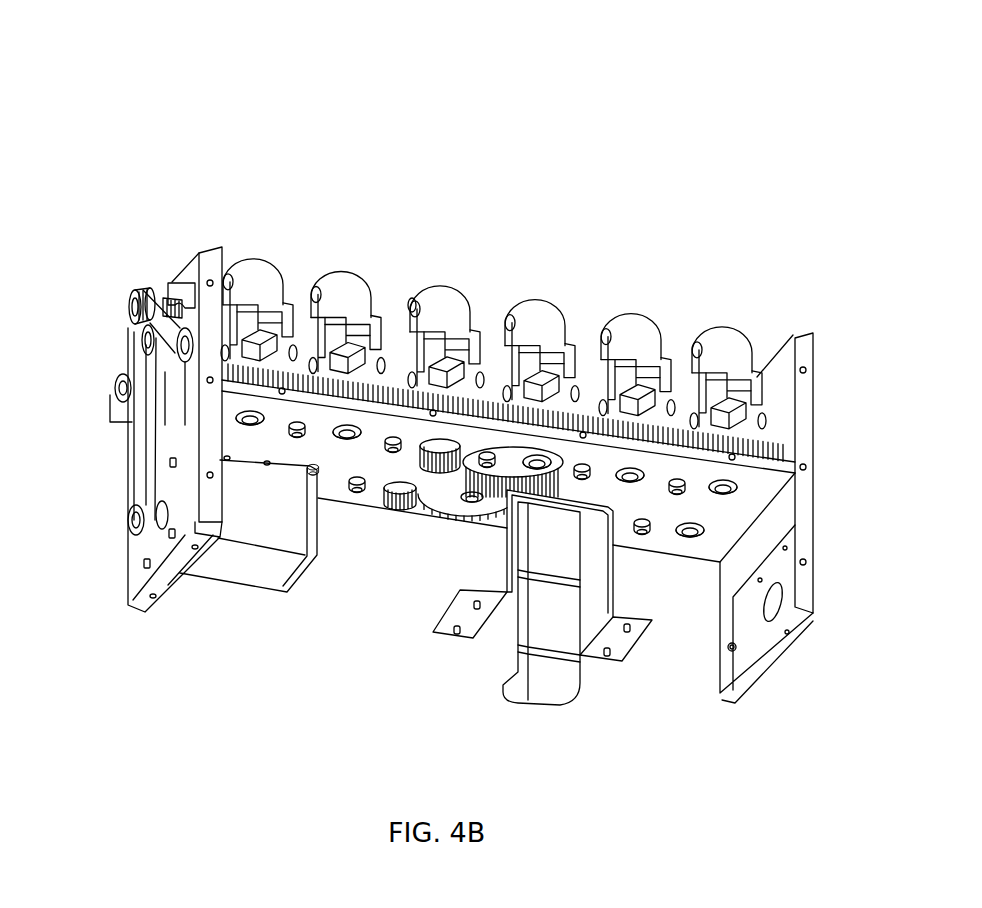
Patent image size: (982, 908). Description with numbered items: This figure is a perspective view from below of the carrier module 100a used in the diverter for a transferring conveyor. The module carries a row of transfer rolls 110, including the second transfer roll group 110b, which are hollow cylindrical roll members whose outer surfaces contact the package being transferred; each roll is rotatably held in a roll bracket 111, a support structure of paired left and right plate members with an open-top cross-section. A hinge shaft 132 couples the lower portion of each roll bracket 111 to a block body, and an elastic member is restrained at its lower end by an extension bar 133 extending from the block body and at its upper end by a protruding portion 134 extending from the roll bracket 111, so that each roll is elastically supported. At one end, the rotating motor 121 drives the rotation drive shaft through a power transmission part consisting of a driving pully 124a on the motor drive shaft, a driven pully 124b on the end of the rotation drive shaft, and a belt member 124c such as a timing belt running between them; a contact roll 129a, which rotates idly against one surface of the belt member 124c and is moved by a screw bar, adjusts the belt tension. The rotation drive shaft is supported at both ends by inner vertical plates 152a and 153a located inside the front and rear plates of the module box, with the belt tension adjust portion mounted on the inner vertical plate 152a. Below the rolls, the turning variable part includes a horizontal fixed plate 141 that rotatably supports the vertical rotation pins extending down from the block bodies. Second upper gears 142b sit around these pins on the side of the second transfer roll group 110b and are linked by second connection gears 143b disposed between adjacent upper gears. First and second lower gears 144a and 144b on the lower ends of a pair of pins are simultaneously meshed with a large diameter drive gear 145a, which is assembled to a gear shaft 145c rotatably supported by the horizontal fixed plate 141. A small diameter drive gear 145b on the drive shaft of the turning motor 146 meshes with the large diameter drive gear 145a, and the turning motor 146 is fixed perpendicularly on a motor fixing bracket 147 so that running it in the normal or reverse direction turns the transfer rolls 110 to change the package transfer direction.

The carrier module 100a is at (431, 120).
The transfer roll 110 is at (346, 286).
The second transfer roll group 110b is at (508, 192).
The roll bracket 111 is at (307, 290).
The rotating motor 121 is at (235, 568).
The driving pully 124a is at (128, 528).
The driven pully 124b is at (137, 283).
The belt member 124c is at (152, 442).
The contact roll 129a is at (117, 340).
The hinge shaft 132 is at (512, 334).
The extension bar 133 is at (585, 392).
The protruding portion 134 is at (566, 330).
The horizontal fixed plate 141 is at (733, 518).
The second upper gear 142b is at (365, 312).
The second connection gear 143b is at (400, 315).
The first lower gear 144a is at (388, 512).
The second lower gear 144b is at (415, 452).
The large diameter drive gear 145a is at (440, 500).
The small diameter drive gear 145b is at (605, 505).
The gear shaft 145c is at (472, 505).
The turning motor 146 is at (535, 698).
The motor fixing bracket 147 is at (623, 645).
The inner vertical plate 152a is at (132, 577).
The inner vertical plate 153a is at (805, 337).